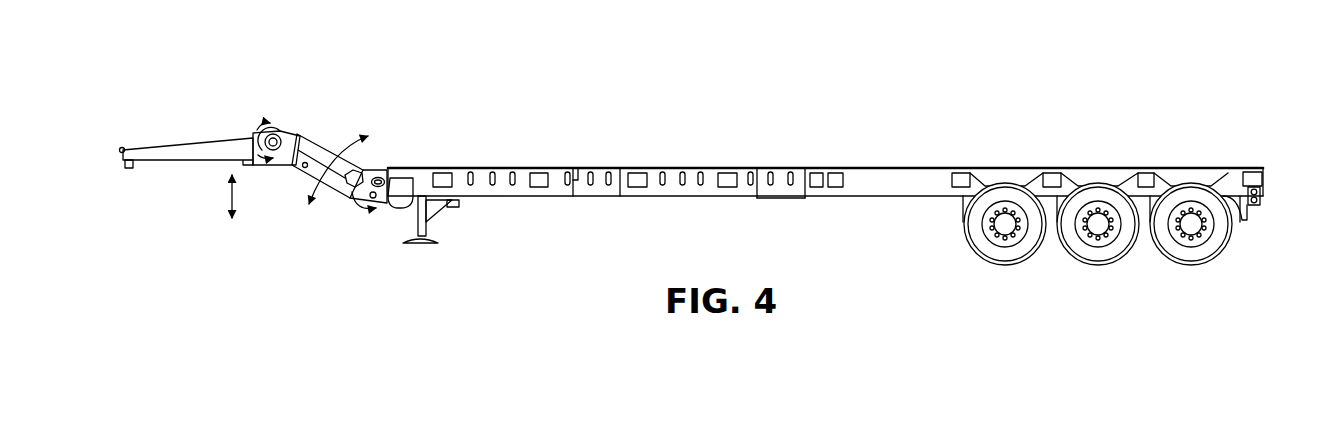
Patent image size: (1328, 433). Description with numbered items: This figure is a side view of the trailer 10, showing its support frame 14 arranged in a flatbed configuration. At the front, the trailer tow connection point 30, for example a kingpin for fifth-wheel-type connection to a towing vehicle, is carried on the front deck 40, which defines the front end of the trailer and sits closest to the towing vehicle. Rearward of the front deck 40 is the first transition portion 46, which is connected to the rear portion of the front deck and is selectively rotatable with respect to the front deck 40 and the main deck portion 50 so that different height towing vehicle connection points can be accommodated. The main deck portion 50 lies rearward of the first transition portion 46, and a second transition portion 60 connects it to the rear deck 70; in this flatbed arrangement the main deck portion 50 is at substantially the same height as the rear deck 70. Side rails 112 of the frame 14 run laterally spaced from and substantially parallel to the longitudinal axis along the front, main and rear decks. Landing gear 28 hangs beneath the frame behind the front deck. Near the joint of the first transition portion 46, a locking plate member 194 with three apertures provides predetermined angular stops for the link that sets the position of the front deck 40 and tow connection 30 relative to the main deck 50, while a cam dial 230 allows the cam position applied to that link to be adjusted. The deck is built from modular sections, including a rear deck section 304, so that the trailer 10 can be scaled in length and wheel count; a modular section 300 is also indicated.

The trailer 10 is at (807, 244).
The support frame 14 is at (791, 159).
The landing gear 28 is at (437, 229).
The trailer tow connection point 30 is at (123, 164).
The front deck 40 is at (187, 187).
The first transition portion 46 is at (366, 109).
The main deck portion 50 is at (543, 160).
The second transition portion 60 is at (926, 160).
The rear deck 70 is at (1102, 158).
The side rails 112 is at (597, 198).
The locking plate member 194 is at (379, 164).
The cam dial 230 is at (292, 139).
The slotted deck section 300 is at (688, 159).
The rear deck section 304 is at (1186, 158).